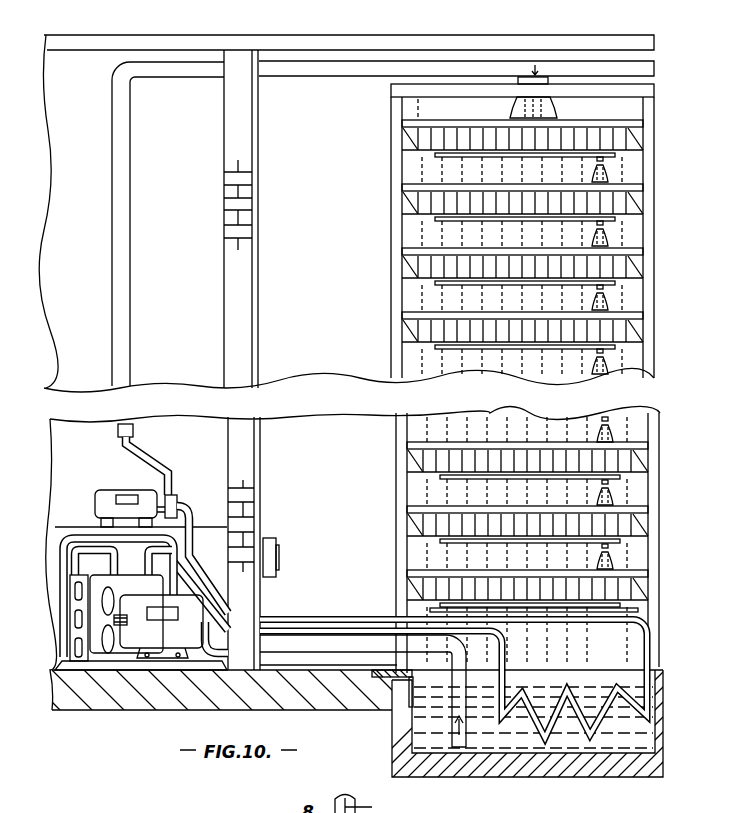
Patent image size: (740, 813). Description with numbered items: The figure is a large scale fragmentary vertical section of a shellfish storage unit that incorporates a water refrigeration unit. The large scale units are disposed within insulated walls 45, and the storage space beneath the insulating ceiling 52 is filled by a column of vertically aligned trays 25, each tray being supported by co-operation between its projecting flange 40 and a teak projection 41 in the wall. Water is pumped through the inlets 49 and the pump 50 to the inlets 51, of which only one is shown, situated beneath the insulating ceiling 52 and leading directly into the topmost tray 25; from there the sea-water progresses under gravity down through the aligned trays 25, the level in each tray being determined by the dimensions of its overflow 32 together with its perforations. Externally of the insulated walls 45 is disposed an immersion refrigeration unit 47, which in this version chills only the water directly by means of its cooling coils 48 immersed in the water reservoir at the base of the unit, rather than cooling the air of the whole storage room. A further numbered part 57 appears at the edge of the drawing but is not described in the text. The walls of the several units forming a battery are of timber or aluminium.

The trays 25 is at (425, 142).
The overflow 32 is at (605, 217).
The projecting flange 40 is at (417, 446).
The teak projection 41 is at (647, 450).
The insulated walls 45 is at (234, 235).
The immersion refrigeration unit 47 is at (118, 651).
The cooling coils 48 is at (600, 733).
The inlets 49 is at (451, 737).
The pump 50 is at (113, 497).
The inlets 51 is at (529, 77).
The insulating ceiling 52 is at (326, 48).
The cylinder 57 is at (369, 804).